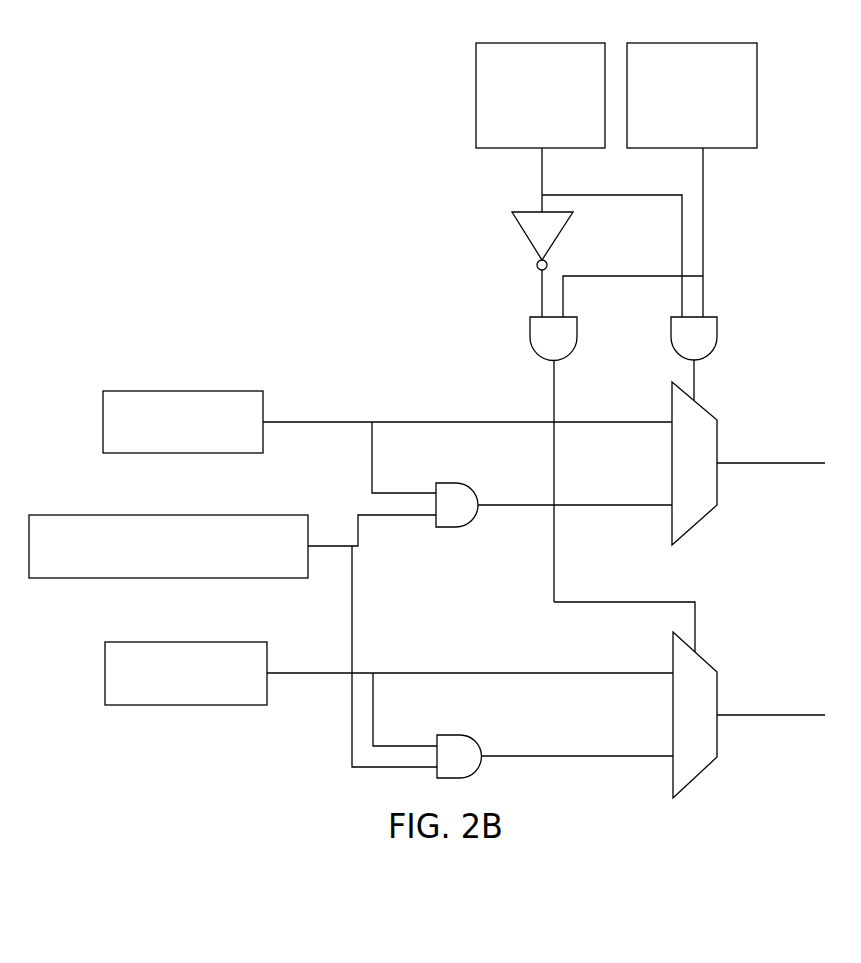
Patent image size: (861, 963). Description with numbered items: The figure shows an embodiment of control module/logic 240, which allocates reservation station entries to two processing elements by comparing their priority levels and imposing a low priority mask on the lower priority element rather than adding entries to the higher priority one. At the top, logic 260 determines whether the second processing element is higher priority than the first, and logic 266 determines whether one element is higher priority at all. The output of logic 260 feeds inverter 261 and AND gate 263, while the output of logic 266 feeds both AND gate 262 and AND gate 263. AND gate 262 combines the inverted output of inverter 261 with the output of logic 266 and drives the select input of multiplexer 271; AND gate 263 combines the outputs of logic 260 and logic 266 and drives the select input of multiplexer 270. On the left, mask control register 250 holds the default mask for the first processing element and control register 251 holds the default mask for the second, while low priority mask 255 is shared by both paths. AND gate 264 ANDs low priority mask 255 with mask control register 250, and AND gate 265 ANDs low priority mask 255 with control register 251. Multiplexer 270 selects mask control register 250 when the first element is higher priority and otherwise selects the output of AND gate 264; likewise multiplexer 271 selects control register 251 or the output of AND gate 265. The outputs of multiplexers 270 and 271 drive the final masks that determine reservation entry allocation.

The control module/logic 240 is at (103, 38).
The logic 260 is at (473, 42).
The logic 266 is at (627, 42).
The inverter 261 is at (542, 264).
The AND gate 262 is at (553, 459).
The AND gate 263 is at (694, 358).
The AND gate 264 is at (554, 505).
The AND gate 265 is at (555, 756).
The mask control register 250 is at (183, 422).
The control register 251 is at (186, 673).
The low priority mask 255 is at (168, 546).
The multiplexer 270 is at (748, 463).
The multiplexer 271 is at (749, 715).